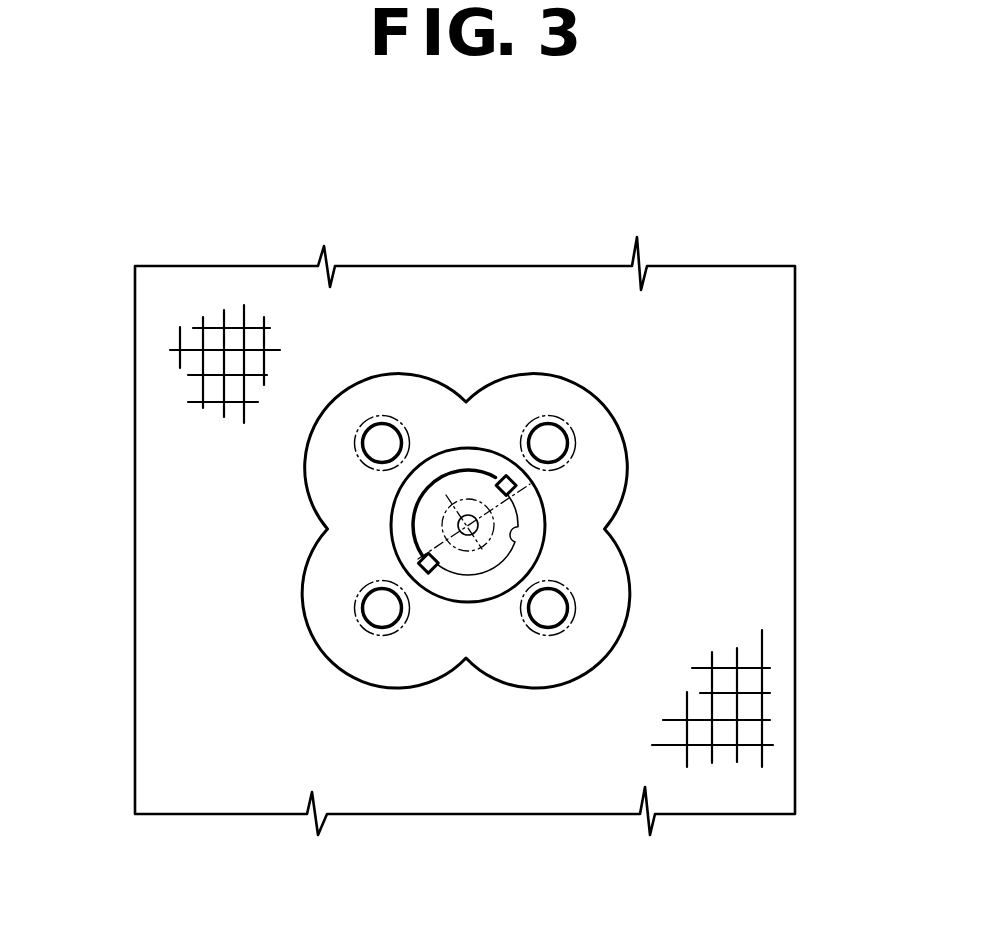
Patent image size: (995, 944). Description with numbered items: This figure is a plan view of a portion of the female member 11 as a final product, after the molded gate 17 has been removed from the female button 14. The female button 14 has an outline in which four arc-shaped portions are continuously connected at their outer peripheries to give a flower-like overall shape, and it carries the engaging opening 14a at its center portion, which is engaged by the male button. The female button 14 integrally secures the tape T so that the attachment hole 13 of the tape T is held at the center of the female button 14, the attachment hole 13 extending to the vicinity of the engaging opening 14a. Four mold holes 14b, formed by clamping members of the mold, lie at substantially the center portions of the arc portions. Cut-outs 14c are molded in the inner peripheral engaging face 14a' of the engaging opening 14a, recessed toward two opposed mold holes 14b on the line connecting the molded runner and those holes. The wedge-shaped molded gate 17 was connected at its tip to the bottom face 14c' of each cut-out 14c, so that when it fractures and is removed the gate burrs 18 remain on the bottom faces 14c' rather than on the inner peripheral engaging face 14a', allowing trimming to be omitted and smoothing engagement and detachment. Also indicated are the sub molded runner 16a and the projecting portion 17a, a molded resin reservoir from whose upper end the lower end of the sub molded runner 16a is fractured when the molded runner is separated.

The female member 11 is at (724, 257).
The tape T is at (753, 342).
The attachment hole 13 is at (467, 549).
The female button 14 is at (625, 425).
The engaging opening 14a is at (449, 391).
The inner peripheral engaging face 14a' is at (695, 576).
The mold holes 14b is at (550, 618).
The cut-out 14c is at (696, 518).
The bottom face of cut-out 14c' is at (233, 603).
The sub molded runner 16a is at (237, 483).
The molded gate 17 is at (474, 685).
The projecting portion 17a is at (517, 719).
The gate burrs 18 is at (457, 549).